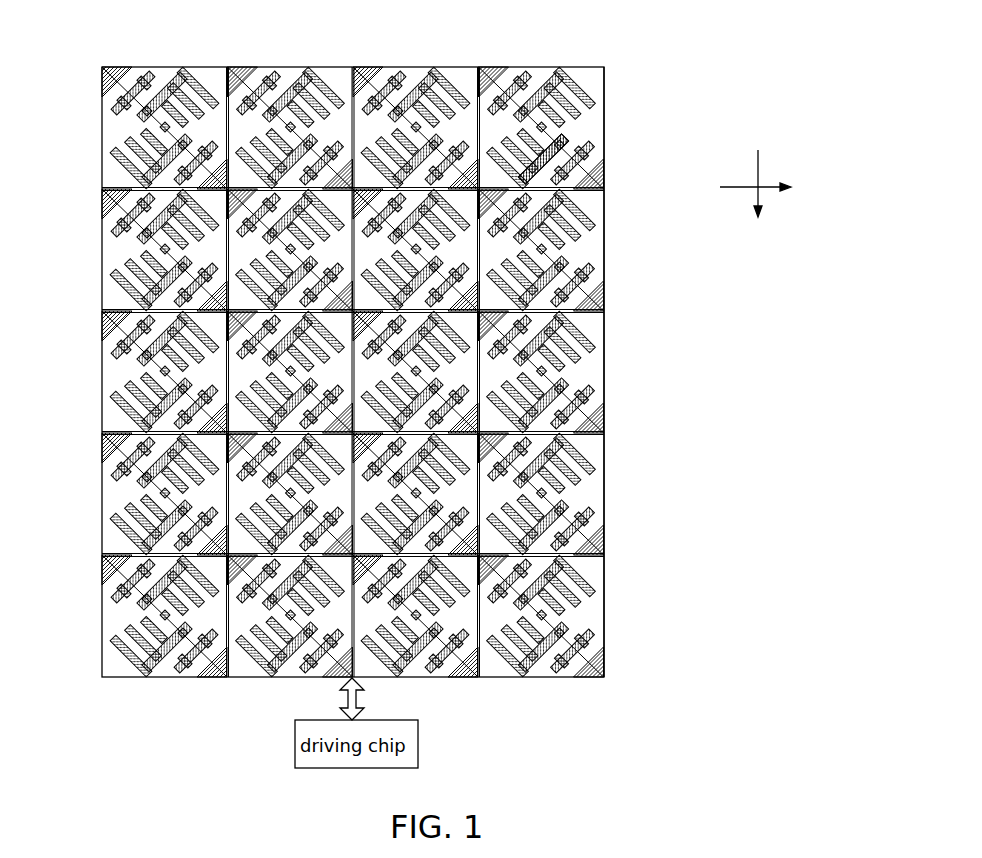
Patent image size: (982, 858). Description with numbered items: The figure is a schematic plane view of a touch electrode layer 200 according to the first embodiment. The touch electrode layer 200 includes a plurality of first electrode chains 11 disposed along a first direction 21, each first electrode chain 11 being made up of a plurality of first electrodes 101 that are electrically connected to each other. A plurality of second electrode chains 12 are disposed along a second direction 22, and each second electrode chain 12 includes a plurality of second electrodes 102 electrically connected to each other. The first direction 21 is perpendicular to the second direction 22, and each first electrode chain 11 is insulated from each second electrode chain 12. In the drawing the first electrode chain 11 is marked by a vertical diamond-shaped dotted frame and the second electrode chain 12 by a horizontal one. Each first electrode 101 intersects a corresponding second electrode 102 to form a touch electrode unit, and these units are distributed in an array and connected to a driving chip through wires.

The touch electrode layer 200 is at (300, 42).
The first electrode chain 11 is at (182, 158).
The first electrode 101 is at (548, 158).
The second electrode 102 is at (572, 131).
The second electrode chain 12 is at (600, 249).
The first direction 21 is at (758, 155).
The second direction 22 is at (743, 187).